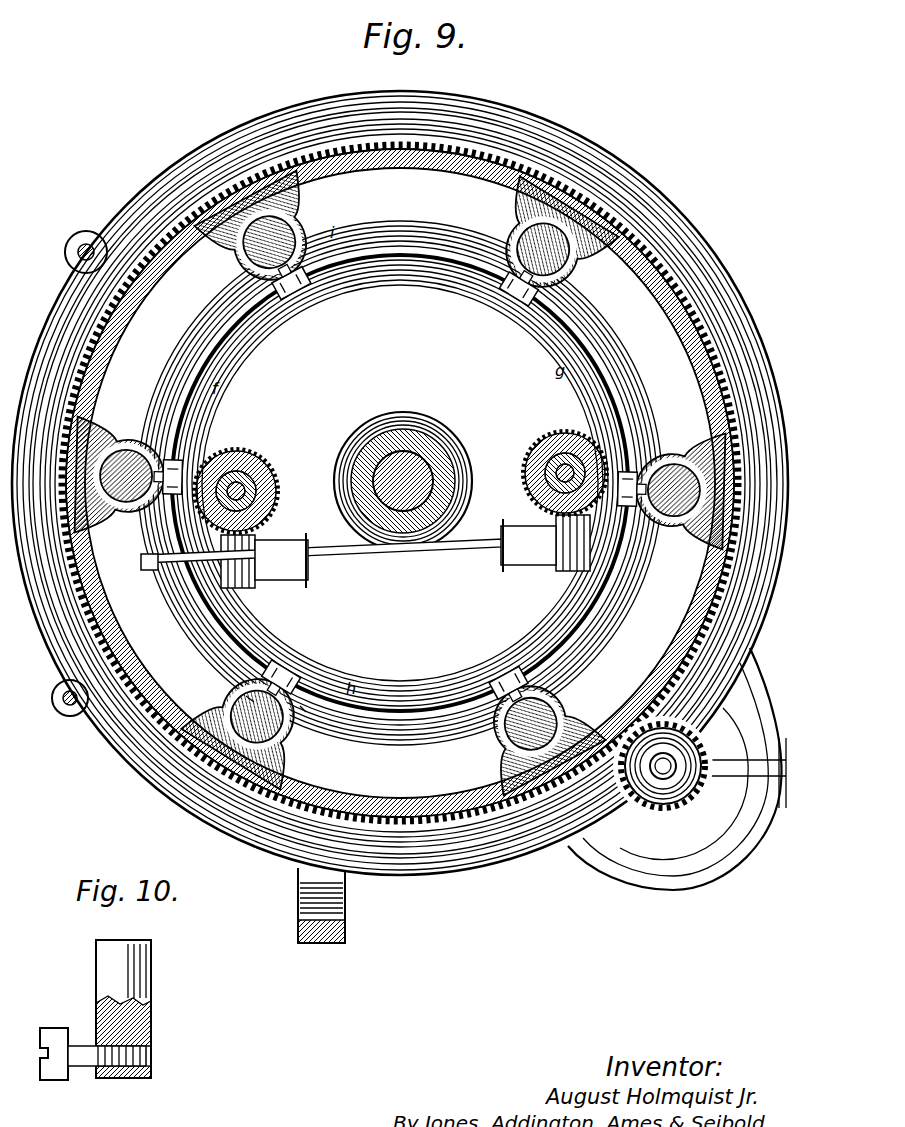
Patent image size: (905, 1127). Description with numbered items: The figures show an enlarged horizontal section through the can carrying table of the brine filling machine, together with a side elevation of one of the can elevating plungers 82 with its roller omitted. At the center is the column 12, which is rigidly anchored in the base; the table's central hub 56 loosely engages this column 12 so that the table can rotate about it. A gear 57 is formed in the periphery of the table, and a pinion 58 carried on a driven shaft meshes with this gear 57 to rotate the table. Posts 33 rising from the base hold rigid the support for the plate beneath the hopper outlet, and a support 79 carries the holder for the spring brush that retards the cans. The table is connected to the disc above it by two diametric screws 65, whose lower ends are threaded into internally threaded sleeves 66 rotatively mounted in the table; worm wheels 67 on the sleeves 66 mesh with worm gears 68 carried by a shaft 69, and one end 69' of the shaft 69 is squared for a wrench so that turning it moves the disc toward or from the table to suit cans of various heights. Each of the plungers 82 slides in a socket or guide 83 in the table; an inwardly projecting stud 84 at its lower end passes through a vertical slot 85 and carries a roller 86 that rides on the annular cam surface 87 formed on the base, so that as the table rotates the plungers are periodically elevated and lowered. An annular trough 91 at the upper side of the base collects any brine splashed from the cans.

In FIG. 9, the column 12 is at (402, 462).
In FIG. 9, the posts 33 is at (77, 236).
In FIG. 9, the central hub 56 is at (388, 420).
In FIG. 9, the gear 57 is at (665, 278).
In FIG. 9, the pinion 58 is at (655, 800).
In FIG. 9, the screws 65 is at (400, 457).
In FIG. 9, the internally threaded sleeves 66 is at (250, 488).
In FIG. 9, the worm wheels 67 is at (400, 457).
In FIG. 9, the worm gears 68 is at (215, 582).
In FIG. 9, the shaft 69 is at (349, 558).
In FIG. 9, the squared end 69' is at (145, 583).
In FIG. 9, the support 79 is at (316, 935).
In FIG. 9, the can elevating plungers 82 is at (520, 233).
In FIG. 10, the can elevating plungers 82 is at (143, 972).
In FIG. 9, the socket or guide 83 is at (238, 690).
In FIG. 9, the stud 84 is at (420, 650).
In FIG. 10, the stud 84 is at (78, 1060).
In FIG. 9, the vertical slot 85 is at (293, 700).
In FIG. 9, the roller 86 is at (302, 272).
In FIG. 9, the annular cam surface 87 is at (533, 614).
In FIG. 9, the annular trough 91 is at (150, 745).